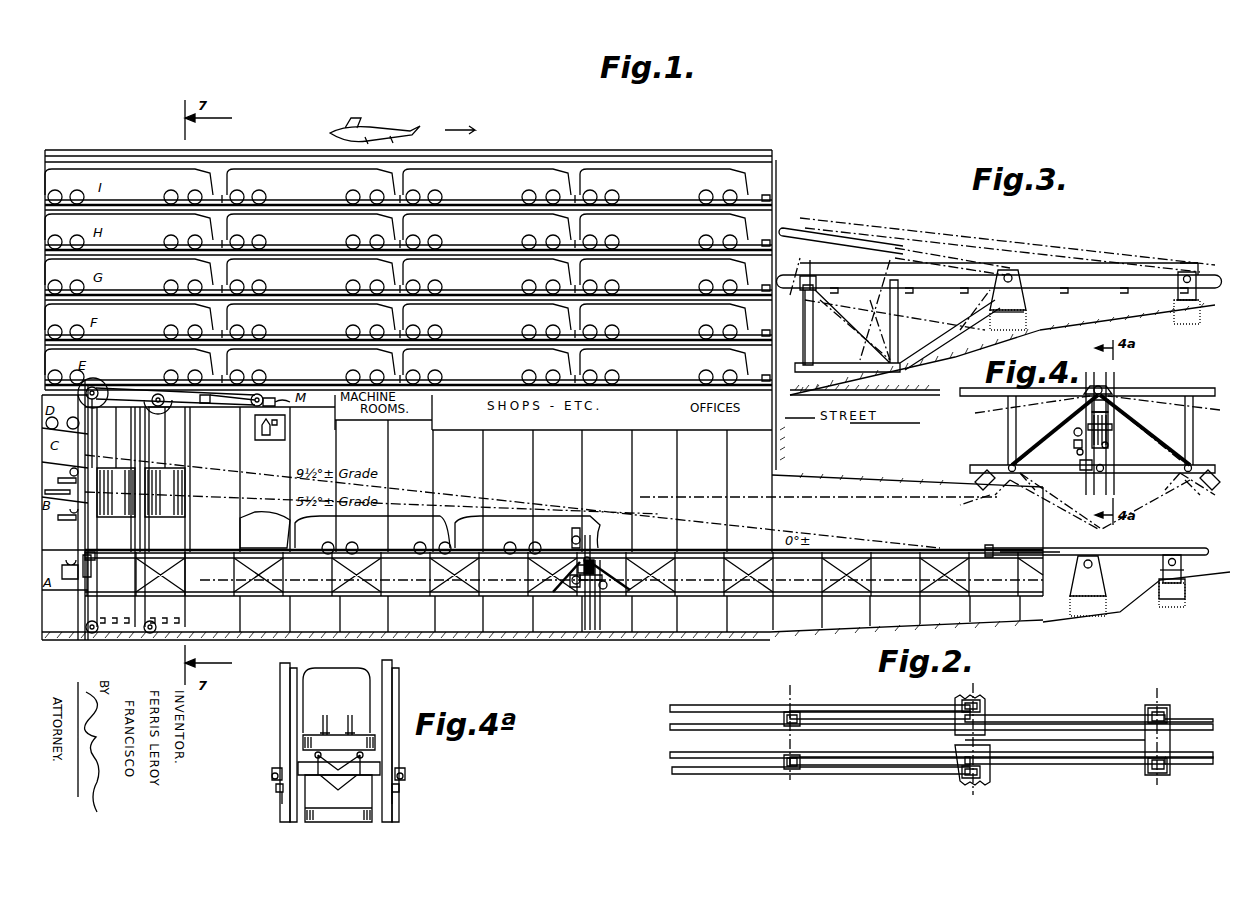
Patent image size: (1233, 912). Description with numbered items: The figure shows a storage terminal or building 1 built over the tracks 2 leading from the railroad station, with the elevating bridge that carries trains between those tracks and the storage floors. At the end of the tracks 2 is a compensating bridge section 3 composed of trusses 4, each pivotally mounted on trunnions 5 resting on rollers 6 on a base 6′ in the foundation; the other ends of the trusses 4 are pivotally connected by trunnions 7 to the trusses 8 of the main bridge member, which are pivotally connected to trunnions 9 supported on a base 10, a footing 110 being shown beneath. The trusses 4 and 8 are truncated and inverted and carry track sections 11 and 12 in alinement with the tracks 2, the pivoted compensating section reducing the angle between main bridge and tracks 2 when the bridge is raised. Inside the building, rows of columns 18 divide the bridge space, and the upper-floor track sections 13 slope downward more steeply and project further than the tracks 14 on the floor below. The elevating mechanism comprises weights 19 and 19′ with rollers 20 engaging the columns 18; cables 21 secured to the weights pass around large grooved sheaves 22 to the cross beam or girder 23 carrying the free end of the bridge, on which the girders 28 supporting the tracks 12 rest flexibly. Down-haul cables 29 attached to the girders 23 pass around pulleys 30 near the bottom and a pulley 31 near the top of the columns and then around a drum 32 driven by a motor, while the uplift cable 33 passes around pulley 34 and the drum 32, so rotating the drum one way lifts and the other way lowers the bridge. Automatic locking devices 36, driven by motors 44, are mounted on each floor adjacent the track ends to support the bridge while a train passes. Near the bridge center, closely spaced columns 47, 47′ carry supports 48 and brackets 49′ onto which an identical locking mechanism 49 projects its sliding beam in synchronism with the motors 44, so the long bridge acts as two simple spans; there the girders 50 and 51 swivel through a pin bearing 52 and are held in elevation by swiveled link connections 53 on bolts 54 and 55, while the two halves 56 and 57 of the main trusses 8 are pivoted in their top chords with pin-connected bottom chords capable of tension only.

In FIG. 1, the storage terminal or building 1 is at (596, 160).
In FIG. 1, the tracks 2 is at (557, 468).
In FIG. 3, the tracks 2 is at (1200, 275).
In FIG. 2, the tracks 2 is at (1205, 725).
In FIG. 1, the compensating bridge section 3 is at (1122, 565).
In FIG. 3, the compensating bridge section 3 is at (1088, 300).
In FIG. 2, the compensating bridge section 3 is at (1066, 714).
In FIG. 1, the trusses 4 is at (1040, 548).
In FIG. 3, the trusses 4 is at (1080, 272).
In FIG. 2, the trusses 4 is at (1098, 715).
In FIG. 1, the trunnions 5 is at (1173, 550).
In FIG. 3, the trunnions 5 is at (1188, 270).
In FIG. 2, the trunnions 5 is at (1162, 708).
In FIG. 1, the rollers 6 is at (1162, 564).
In FIG. 3, the rollers 6 is at (1178, 300).
In FIG. 1, the base 6′ is at (1188, 582).
In FIG. 2, the base 6′ is at (1152, 710).
In FIG. 1, the trunnions 7 is at (985, 548).
In FIG. 3, the trunnions 7 is at (815, 245).
In FIG. 2, the trunnions 7 is at (796, 712).
In FIG. 1, the trusses of the main bridge member 8 is at (375, 552).
In FIG. 3, the trusses of the main bridge member 8 is at (900, 246).
In FIG. 2, the trusses of the main bridge member 8 is at (872, 711).
In FIG. 1, the trunnions 9 is at (1088, 550).
In FIG. 3, the trunnions 9 is at (1012, 270).
In FIG. 2, the trunnions 9 is at (985, 703).
In FIG. 2, the base 10 is at (975, 700).
In FIG. 3, the track sections 11 is at (938, 240).
In FIG. 2, the track sections 11 is at (1075, 752).
In FIG. 1, the track sections 12 is at (404, 552).
In FIG. 3, the track sections 12 is at (800, 228).
In FIG. 2, the track sections 12 is at (752, 750).
In FIG. 1, the track sections 13 is at (80, 448).
In FIG. 1, the track sections 14 is at (60, 490).
In FIG. 1, the columns 18 is at (530, 470).
In FIG. 1, the weights 19 is at (130, 518).
In FIG. 1, the elevator car 19′ is at (186, 484).
In FIG. 1, the rollers 20 is at (185, 472).
In FIG. 1, the cables 21 is at (120, 452).
In FIG. 1, the sheaves 22 is at (175, 401).
In FIG. 1, the cross beam or girder 23 is at (92, 562).
In FIG. 1, the girders 28 is at (92, 552).
In FIG. 1, the down-haul cables 29 is at (212, 405).
In FIG. 1, the pulleys 30 is at (90, 635).
In FIG. 1, the pulley 31 is at (160, 406).
In FIG. 1, the drum 32 is at (262, 395).
In FIG. 1, the cable 33 is at (205, 395).
In FIG. 1, the pulley 34 is at (96, 390).
In FIG. 1, the automatic locking devices 36 is at (70, 562).
In FIG. 1, the motors 44 is at (580, 566).
In FIG. 4, the motors 44 is at (1075, 430).
In FIG. 4A, the motors 44 is at (272, 775).
In FIG. 1, the columns 47 is at (590, 620).
In FIG. 4, the columns 47 is at (1093, 485).
In FIG. 4A, the columns 47 is at (282, 686).
In FIG. 1, the columns 47′ is at (605, 615).
In FIG. 4, the columns 47′ is at (1114, 482).
In FIG. 4A, the columns 47′ is at (280, 706).
In FIG. 4, the supports 48 is at (1084, 470).
In FIG. 4A, the supports 48 is at (280, 790).
In FIG. 1, the automatic locking mechanism 49 is at (570, 536).
In FIG. 4, the automatic locking mechanism 49 is at (1076, 454).
In FIG. 4A, the automatic locking mechanism 49 is at (272, 779).
In FIG. 1, the brackets or supports 49′ is at (603, 592).
In FIG. 4, the brackets or supports 49′ is at (1108, 450).
In FIG. 4A, the brackets or supports 49′ is at (286, 804).
In FIG. 1, the girder 50 is at (594, 585).
In FIG. 4, the girder 50 is at (1120, 426).
In FIG. 4A, the girder 50 is at (305, 768).
In FIG. 1, the girder 51 is at (590, 558).
In FIG. 4, the girder 51 is at (1105, 392).
In FIG. 4A, the girder 51 is at (334, 735).
In FIG. 1, the pin bearing 52 is at (592, 570).
In FIG. 4, the pin bearing 52 is at (1112, 414).
In FIG. 4A, the pin bearing 52 is at (318, 755).
In FIG. 4A, the swiveled link connections 53 is at (339, 769).
In FIG. 4A, the bolt 54 is at (362, 728).
In FIG. 4A, the bolt 55 is at (338, 798).
In FIG. 1, the half of the main truss 56 is at (550, 585).
In FIG. 4, the half of the main truss 56 is at (1008, 432).
In FIG. 1, the half of the main truss 57 is at (615, 574).
In FIG. 4, the half of the main truss 57 is at (1165, 442).
In FIG. 3, the footing 110 is at (1030, 312).